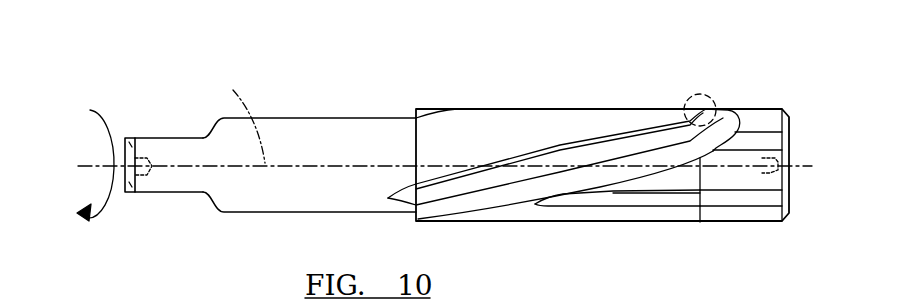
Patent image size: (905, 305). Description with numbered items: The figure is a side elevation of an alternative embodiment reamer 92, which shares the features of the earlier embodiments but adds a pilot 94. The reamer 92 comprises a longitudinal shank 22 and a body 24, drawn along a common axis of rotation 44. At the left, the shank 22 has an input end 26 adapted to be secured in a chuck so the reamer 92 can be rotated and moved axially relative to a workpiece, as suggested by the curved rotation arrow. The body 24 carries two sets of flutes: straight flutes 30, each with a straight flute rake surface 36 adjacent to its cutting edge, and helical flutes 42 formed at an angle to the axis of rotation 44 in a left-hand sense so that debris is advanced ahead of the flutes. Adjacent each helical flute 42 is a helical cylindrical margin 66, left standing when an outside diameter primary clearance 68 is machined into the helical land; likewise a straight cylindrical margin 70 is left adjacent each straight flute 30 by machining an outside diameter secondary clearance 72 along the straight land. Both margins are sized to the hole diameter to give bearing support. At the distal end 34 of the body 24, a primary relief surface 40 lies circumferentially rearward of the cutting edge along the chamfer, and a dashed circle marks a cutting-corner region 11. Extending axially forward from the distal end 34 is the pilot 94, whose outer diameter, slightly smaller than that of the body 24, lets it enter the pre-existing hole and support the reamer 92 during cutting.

The reamer 92 is at (690, 31).
The cutting edge detail region 11 is at (718, 98).
The pilot 94 is at (760, 108).
The distal end 34 is at (705, 103).
The body 24 is at (490, 105).
The outside diameter primary clearance 68 is at (538, 123).
The helical cylindrical margin 66 is at (623, 130).
The shank 22 is at (313, 114).
The axis of rotation 44 is at (238, 113).
The input end 26 is at (176, 200).
The helical flute 42 is at (563, 183).
The straight cylindrical margin 70 is at (628, 193).
The outside diameter secondary clearance 72 is at (647, 183).
The straight flute 30 is at (670, 198).
The straight flute rake surface 36 is at (700, 200).
The primary relief surface 40 is at (713, 190).